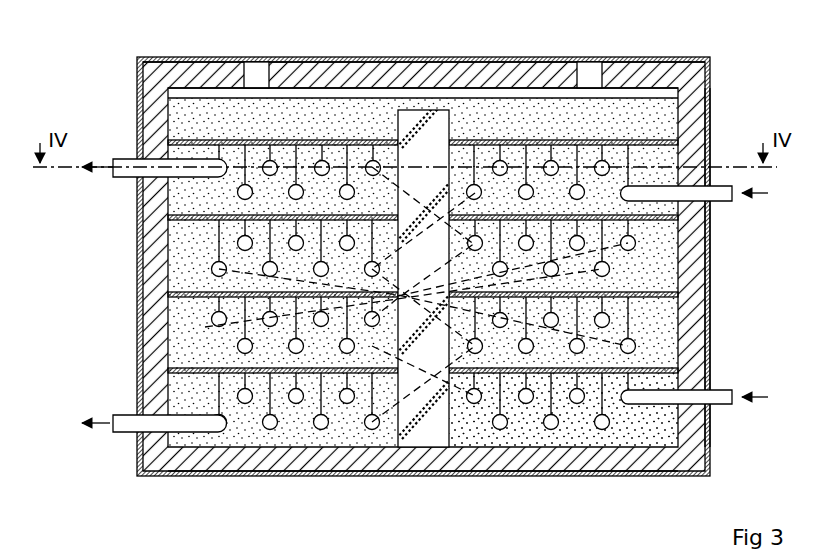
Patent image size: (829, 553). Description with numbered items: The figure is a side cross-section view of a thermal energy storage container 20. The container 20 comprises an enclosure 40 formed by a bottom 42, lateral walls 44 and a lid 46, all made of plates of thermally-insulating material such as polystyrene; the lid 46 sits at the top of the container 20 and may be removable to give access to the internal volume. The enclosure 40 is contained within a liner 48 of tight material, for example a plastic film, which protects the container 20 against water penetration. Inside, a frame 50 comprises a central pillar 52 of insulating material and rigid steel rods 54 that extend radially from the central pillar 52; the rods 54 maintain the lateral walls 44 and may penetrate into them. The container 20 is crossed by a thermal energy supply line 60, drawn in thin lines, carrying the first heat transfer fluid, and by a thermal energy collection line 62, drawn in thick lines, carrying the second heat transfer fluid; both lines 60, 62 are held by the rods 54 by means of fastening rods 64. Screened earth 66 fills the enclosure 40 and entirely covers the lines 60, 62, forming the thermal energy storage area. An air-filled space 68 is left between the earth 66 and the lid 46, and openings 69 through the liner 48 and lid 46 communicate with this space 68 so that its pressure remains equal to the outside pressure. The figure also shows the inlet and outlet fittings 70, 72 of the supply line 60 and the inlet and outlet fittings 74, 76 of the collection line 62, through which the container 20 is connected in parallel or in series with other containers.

The container 20 is at (722, 67).
The enclosure 40 is at (712, 300).
The bottom 42 is at (480, 458).
The lateral walls 44 is at (690, 247).
The lid 46 is at (533, 72).
The liner 48 is at (710, 367).
The frame 50 is at (393, 432).
The central pillar 52 is at (432, 440).
The rigid rods 54 is at (198, 138).
The thermal energy supply line 60 is at (213, 330).
The thermal energy collection line 62 is at (603, 430).
The fastening rods 64 is at (213, 238).
The earth 66 is at (670, 428).
The air-filled space 68 is at (627, 93).
The openings 69 is at (258, 70).
The inlet fitting 70 is at (727, 405).
The outlet fitting 72 is at (120, 176).
The inlet fitting 74 is at (723, 181).
The outlet fitting 76 is at (125, 432).